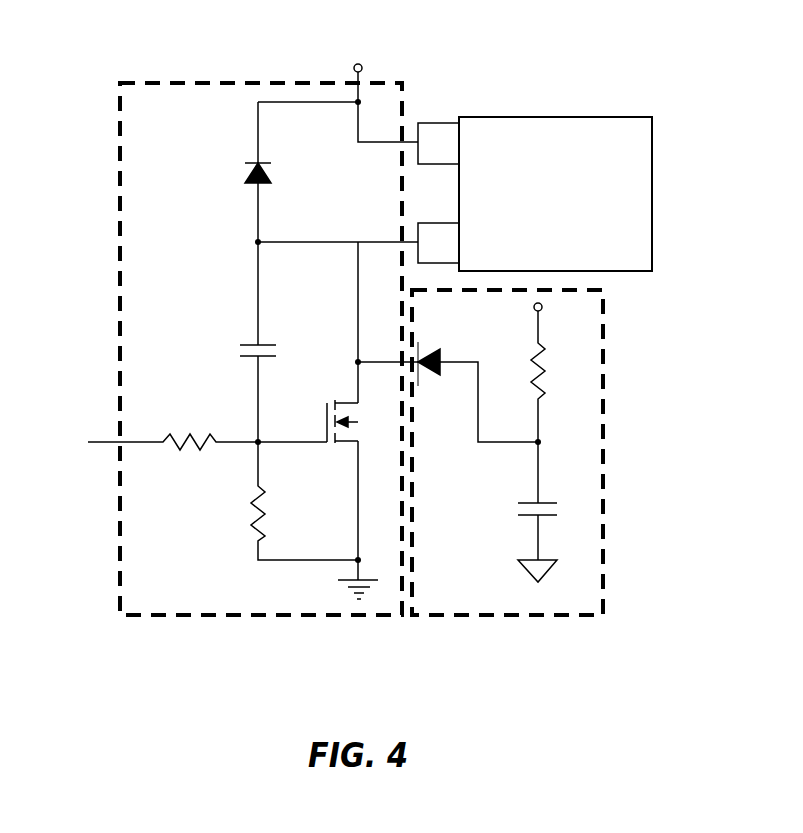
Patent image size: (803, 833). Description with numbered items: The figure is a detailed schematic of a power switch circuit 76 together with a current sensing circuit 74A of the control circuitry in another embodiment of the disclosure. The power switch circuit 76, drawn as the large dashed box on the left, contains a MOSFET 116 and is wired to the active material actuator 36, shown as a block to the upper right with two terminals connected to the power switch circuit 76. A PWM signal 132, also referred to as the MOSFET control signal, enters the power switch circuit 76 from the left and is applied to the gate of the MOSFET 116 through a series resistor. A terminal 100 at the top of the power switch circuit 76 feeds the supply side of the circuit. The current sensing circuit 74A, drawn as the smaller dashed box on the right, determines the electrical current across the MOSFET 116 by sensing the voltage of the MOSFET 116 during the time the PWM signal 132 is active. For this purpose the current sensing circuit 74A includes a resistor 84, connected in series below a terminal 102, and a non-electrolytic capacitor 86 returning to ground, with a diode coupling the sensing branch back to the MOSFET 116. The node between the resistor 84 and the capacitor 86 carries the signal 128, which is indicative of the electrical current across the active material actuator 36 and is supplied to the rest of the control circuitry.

The active material actuator 36 is at (645, 116).
The current sensing circuit 74A is at (523, 617).
The power switch circuit 76 is at (200, 620).
The resistor 84 is at (541, 377).
The non-electrolytic capacitor 86 is at (532, 517).
The power supply terminal 100 is at (357, 62).
The input terminal 102 is at (536, 312).
The MOSFET 116 is at (329, 405).
The signal 128 is at (550, 440).
The PWM signal 132 is at (104, 442).